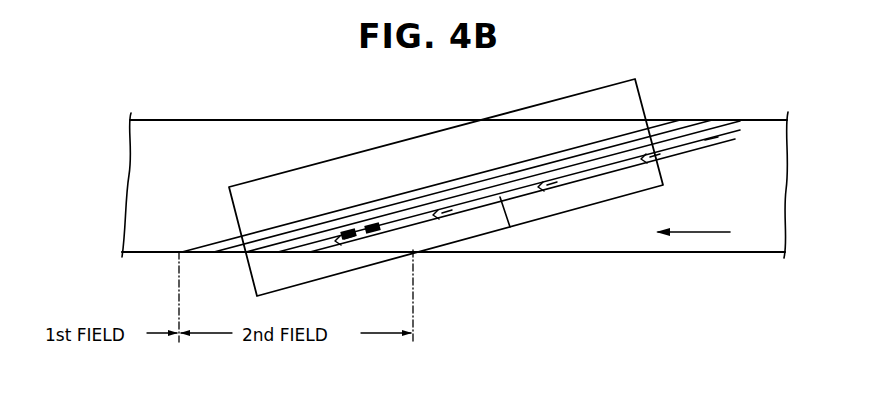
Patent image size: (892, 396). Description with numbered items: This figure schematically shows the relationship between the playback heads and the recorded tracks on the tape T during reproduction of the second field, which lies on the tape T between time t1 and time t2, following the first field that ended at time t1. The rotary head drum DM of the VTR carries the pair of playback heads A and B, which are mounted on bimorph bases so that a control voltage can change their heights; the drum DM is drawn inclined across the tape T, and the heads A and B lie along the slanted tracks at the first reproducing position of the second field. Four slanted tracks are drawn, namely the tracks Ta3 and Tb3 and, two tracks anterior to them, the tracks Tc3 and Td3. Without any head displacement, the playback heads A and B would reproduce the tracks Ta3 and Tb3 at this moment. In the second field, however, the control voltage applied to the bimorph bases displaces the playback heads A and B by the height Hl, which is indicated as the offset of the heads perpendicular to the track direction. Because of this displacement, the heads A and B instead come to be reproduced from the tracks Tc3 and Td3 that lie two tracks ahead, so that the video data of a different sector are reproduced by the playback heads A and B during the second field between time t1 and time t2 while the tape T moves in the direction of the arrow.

The tape T is at (737, 119).
The rotary head drum DM is at (598, 88).
The track Ta3 is at (256, 233).
The track Tb3 is at (330, 243).
The track Tc3 is at (402, 207).
The track Td3 is at (462, 207).
The height Hl is at (507, 222).
The playback head A is at (352, 240).
The playback head B is at (374, 236).
The time t1 is at (189, 308).
The time t2 is at (393, 307).